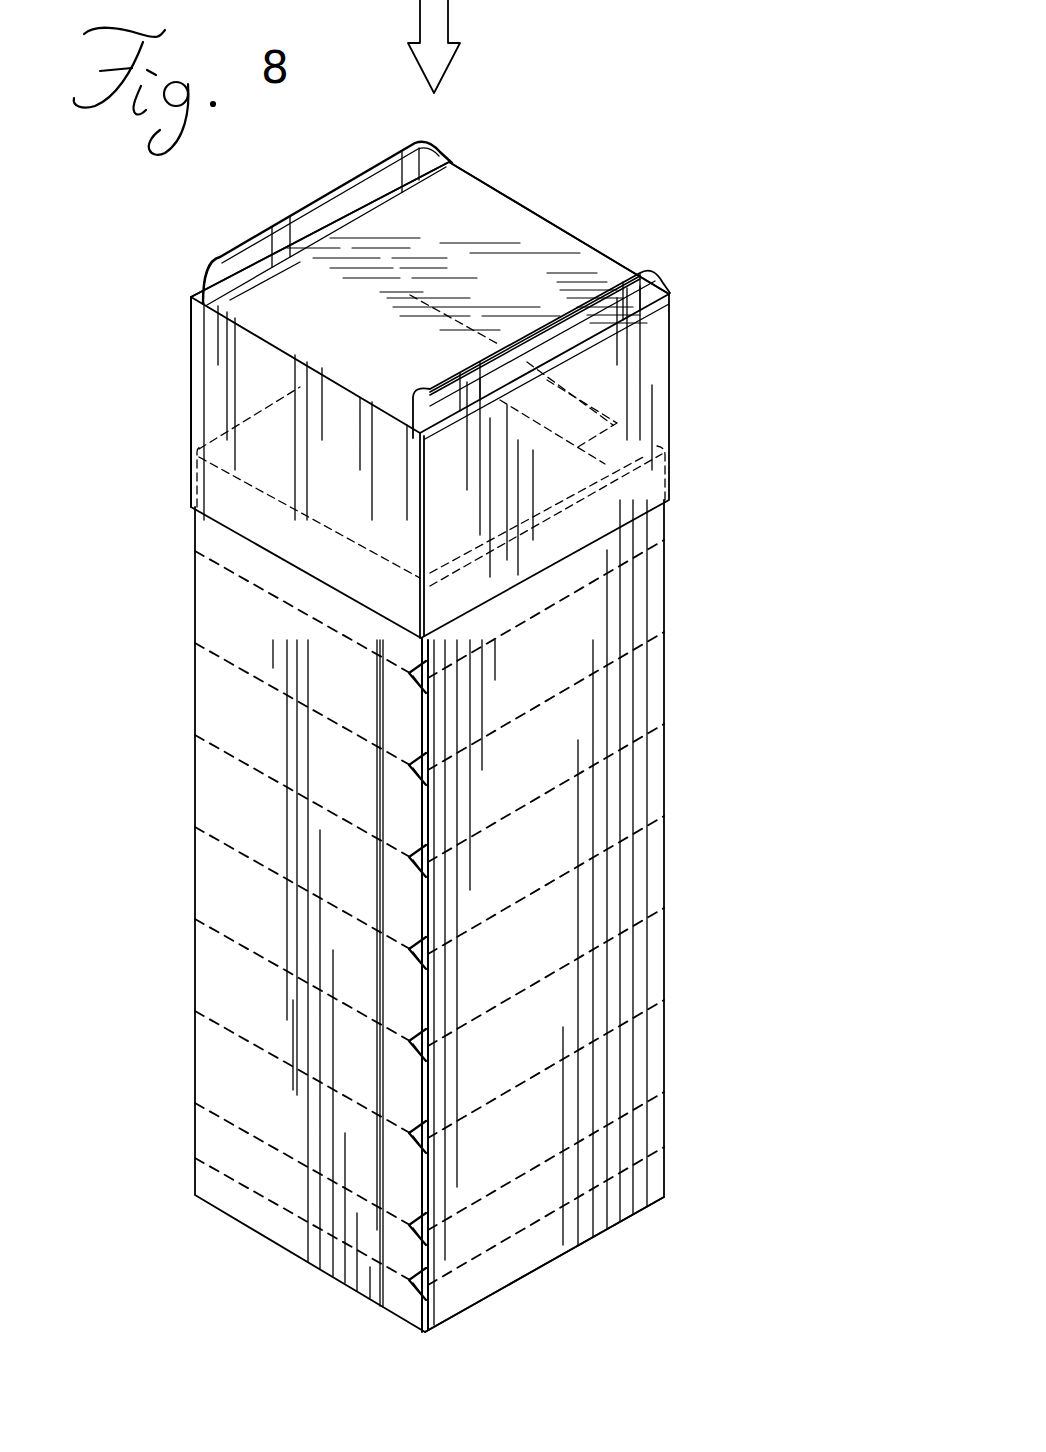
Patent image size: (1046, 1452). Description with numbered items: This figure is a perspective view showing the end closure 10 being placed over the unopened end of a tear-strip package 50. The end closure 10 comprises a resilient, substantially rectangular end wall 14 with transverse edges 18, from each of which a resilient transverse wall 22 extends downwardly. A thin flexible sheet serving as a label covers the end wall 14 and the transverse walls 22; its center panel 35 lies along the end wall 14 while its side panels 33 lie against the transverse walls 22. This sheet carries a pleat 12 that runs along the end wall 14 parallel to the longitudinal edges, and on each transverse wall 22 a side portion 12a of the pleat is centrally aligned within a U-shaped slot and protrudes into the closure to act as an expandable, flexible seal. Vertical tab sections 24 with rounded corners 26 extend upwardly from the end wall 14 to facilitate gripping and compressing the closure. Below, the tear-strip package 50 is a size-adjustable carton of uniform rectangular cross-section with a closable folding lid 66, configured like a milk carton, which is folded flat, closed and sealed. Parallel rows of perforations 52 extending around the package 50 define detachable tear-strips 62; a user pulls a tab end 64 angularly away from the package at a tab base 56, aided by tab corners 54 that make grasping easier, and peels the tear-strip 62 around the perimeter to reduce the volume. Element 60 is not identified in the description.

The end closure 10 is at (693, 372).
The pleat 12 is at (541, 219).
The side portion of the pleat 12a is at (295, 487).
The end wall 14 is at (449, 163).
The transverse edges 18 is at (615, 257).
The transverse wall 22 is at (195, 386).
The tab sections 24 is at (430, 160).
The rounded corners 26 is at (211, 262).
The side panels 33 is at (218, 422).
The center panel 35 is at (262, 305).
The folding lid 66 is at (627, 423).
The tear-strip package 50 is at (705, 831).
The perforations 52 is at (613, 665).
The tab corners 54 is at (403, 876).
The tab base 56 is at (373, 790).
The bottom edge 60 is at (627, 1213).
The tear-strips 62 is at (230, 697).
The tab end 64 is at (432, 806).